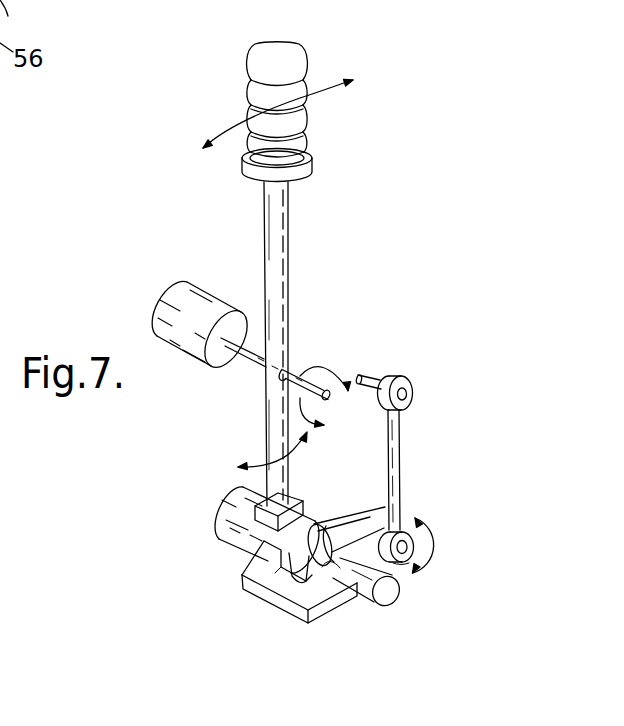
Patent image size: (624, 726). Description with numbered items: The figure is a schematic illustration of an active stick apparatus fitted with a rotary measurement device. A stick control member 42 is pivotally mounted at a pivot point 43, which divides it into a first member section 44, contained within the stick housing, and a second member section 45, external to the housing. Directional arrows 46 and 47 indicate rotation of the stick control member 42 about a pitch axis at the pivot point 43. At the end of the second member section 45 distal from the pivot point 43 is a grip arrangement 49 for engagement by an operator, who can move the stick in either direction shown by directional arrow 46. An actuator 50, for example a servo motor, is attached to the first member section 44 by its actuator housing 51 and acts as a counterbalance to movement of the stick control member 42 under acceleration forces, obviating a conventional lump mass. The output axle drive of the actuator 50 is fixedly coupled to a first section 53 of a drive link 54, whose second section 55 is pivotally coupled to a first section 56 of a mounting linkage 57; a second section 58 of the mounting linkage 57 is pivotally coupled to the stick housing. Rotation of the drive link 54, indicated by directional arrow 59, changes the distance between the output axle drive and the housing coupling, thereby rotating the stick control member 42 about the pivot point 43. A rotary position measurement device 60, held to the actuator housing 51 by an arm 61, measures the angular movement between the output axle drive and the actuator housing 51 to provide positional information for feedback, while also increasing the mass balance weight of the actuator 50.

The stick control member 42 is at (262, 256).
The pivot point 43 is at (291, 368).
The first member section 44 is at (273, 418).
The second member section 45 is at (288, 235).
The directional arrow 46 is at (240, 126).
The directional arrow 47 is at (306, 443).
The grip arrangement 49 is at (267, 57).
The actuator 50 is at (350, 536).
The actuator housing 51 is at (230, 500).
The first section of the drive link 53 is at (282, 556).
The drive link 54 is at (356, 553).
The second section of the drive link 55 is at (389, 504).
The first section of the mounting linkage 56 is at (401, 564).
The mounting linkage 57 is at (402, 428).
The second section of the mounting linkage 58 is at (412, 382).
The directional arrow 59 is at (435, 540).
The rotary position measurement device 60 is at (392, 596).
The arm 61 is at (332, 612).